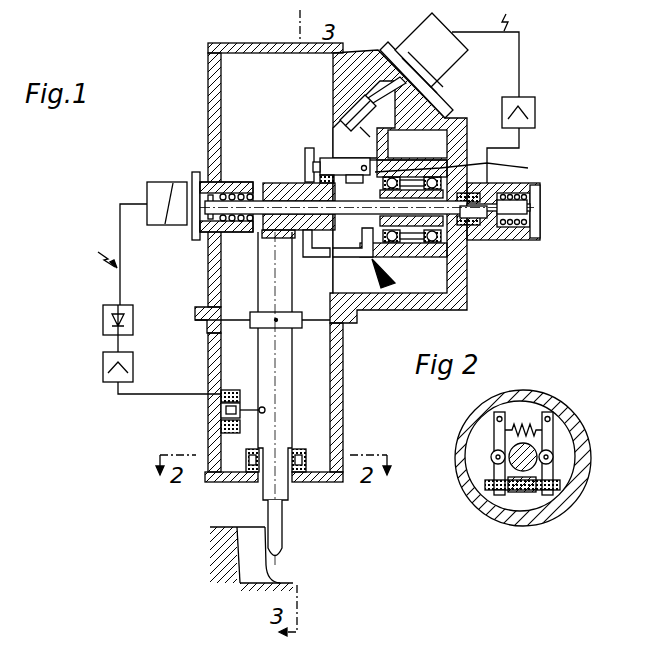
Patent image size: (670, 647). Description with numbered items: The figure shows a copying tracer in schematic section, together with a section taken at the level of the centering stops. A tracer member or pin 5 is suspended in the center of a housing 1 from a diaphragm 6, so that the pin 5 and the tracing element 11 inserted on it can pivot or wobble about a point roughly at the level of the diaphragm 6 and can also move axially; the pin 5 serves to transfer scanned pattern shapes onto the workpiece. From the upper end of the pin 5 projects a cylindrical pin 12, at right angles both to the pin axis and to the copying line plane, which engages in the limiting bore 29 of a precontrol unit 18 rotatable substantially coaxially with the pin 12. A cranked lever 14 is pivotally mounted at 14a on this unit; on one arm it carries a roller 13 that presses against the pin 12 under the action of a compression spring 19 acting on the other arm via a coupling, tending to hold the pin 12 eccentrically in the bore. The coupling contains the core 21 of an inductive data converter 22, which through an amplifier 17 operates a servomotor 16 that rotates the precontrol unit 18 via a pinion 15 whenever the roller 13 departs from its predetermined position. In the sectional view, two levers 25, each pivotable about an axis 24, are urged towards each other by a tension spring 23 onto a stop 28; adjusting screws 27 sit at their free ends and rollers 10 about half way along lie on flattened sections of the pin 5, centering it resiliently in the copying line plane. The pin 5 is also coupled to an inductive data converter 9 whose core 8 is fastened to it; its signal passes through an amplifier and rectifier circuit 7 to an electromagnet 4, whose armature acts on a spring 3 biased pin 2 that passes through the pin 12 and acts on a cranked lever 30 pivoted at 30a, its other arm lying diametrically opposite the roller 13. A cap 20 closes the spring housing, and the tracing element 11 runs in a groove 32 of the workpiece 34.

In FIG. 1, the housing 1 is at (208, 73).
In FIG. 1, the pin 2 is at (259, 203).
In FIG. 1, the spring 3 is at (203, 184).
In FIG. 1, the electromagnet 4 is at (170, 182).
In FIG. 1, the tracer member pin 5 is at (275, 295).
In FIG. 1, the diaphragm 6 is at (202, 308).
In FIG. 1, the amplifier and rectifier circuit 7 is at (133, 325).
In FIG. 1, the core 8 is at (221, 395).
In FIG. 1, the inductive data converter 9 is at (221, 427).
In FIG. 1, the rollers 10 is at (247, 466).
In FIG. 2, the rollers 10 is at (560, 458).
In FIG. 1, the tracing element 11 is at (281, 506).
In FIG. 1, the cylindrical pin 12 is at (300, 183).
In FIG. 1, the roller 13 is at (308, 150).
In FIG. 1, the cranked lever 14 is at (335, 166).
In FIG. 1, the pivot of cranked lever 14 14a is at (405, 158).
In FIG. 1, the pinion 15 is at (372, 126).
In FIG. 1, the servomotor 16 is at (432, 68).
In FIG. 1, the amplifier 17 is at (543, 106).
In FIG. 1, the precontrol unit 18 is at (465, 166).
In FIG. 1, the compression spring 19 is at (540, 187).
In FIG. 1, the spring 20 is at (540, 214).
In FIG. 1, the core 21 is at (520, 240).
In FIG. 1, the inductive data converter 22 is at (478, 226).
In FIG. 2, the tension spring 23 is at (520, 428).
In FIG. 2, the axis 24 is at (553, 415).
In FIG. 2, the levers 25 is at (556, 449).
In FIG. 2, the adjusting screws 27 is at (560, 486).
In FIG. 2, the stop 28 is at (540, 492).
In FIG. 1, the limiting bore 29 is at (356, 252).
In FIG. 1, the cranked lever 30 is at (310, 258).
In FIG. 1, the swivel axis of cranked lever 30 30a is at (384, 264).
In FIG. 1, the groove 32 is at (284, 579).
In FIG. 1, the workpiece 34 is at (262, 556).